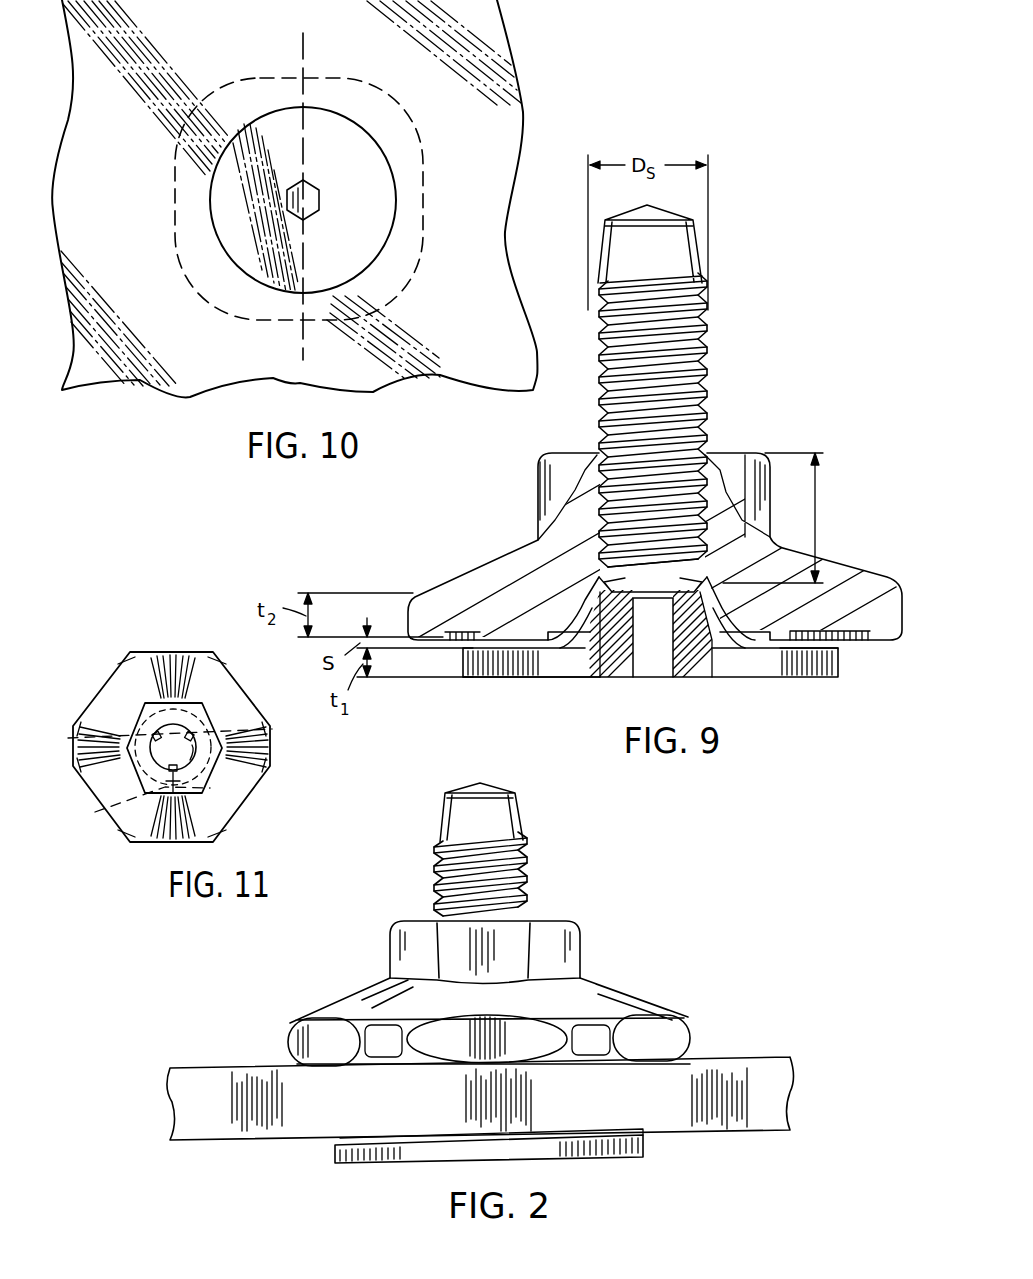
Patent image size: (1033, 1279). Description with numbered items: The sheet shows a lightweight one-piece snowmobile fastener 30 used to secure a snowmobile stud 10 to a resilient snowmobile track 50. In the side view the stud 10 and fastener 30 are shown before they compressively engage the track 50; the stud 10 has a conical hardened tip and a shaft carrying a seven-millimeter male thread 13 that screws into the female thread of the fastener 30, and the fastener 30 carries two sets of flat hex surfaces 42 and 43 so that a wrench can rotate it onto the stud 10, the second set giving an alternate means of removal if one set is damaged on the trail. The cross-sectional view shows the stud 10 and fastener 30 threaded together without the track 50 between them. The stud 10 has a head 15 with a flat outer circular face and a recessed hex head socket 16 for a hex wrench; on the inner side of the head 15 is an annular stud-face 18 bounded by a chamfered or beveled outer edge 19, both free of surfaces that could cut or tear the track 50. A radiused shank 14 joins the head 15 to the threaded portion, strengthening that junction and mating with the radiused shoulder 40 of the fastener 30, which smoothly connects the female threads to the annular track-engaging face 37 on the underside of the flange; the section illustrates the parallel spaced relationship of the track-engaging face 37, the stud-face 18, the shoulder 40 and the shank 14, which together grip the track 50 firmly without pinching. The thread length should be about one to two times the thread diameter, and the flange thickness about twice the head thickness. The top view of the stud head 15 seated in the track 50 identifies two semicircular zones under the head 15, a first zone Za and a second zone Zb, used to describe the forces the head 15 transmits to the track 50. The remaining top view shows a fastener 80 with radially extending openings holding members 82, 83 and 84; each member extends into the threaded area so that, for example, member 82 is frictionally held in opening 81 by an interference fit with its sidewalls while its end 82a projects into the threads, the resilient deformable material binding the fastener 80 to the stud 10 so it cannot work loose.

In FIG. 9, the snowmobile stud 10 is at (690, 398).
In FIG. 2, the snowmobile stud 10 is at (530, 835).
In FIG. 9, the male thread 13 is at (708, 415).
In FIG. 9, the radiused shank 14 is at (517, 679).
In FIG. 10, the head 15 is at (323, 118).
In FIG. 9, the head 15 is at (742, 669).
In FIG. 2, the head 15 is at (613, 1156).
In FIG. 10, the recessed hex head socket 16 is at (315, 192).
In FIG. 9, the recessed hex head socket 16 is at (622, 670).
In FIG. 9, the annular stud-face 18 is at (797, 665).
In FIG. 2, the chamfered or beveled outer edge 19 is at (646, 1131).
In FIG. 9, the snowmobile fastener 30 is at (660, 586).
In FIG. 2, the snowmobile fastener 30 is at (511, 984).
In FIG. 9, the annular track-engaging face 37 is at (840, 641).
In FIG. 9, the radiused shoulder 40 is at (577, 652).
In FIG. 2, the flat hex surfaces 42 is at (577, 948).
In FIG. 2, the flat hex surfaces 43 is at (678, 1036).
In FIG. 10, the snowmobile track 50 is at (505, 125).
In FIG. 2, the snowmobile track 50 is at (748, 1060).
In FIG. 11, the fastener 80 is at (133, 822).
In FIG. 11, the opening 81 is at (207, 722).
In FIG. 11, the member 82 is at (262, 730).
In FIG. 11, the end 82a is at (190, 754).
In FIG. 11, the member 83 is at (66, 739).
In FIG. 11, the member 84 is at (94, 813).
In FIG. 10, the first zone Za is at (227, 227).
In FIG. 10, the second zone Zb is at (368, 230).